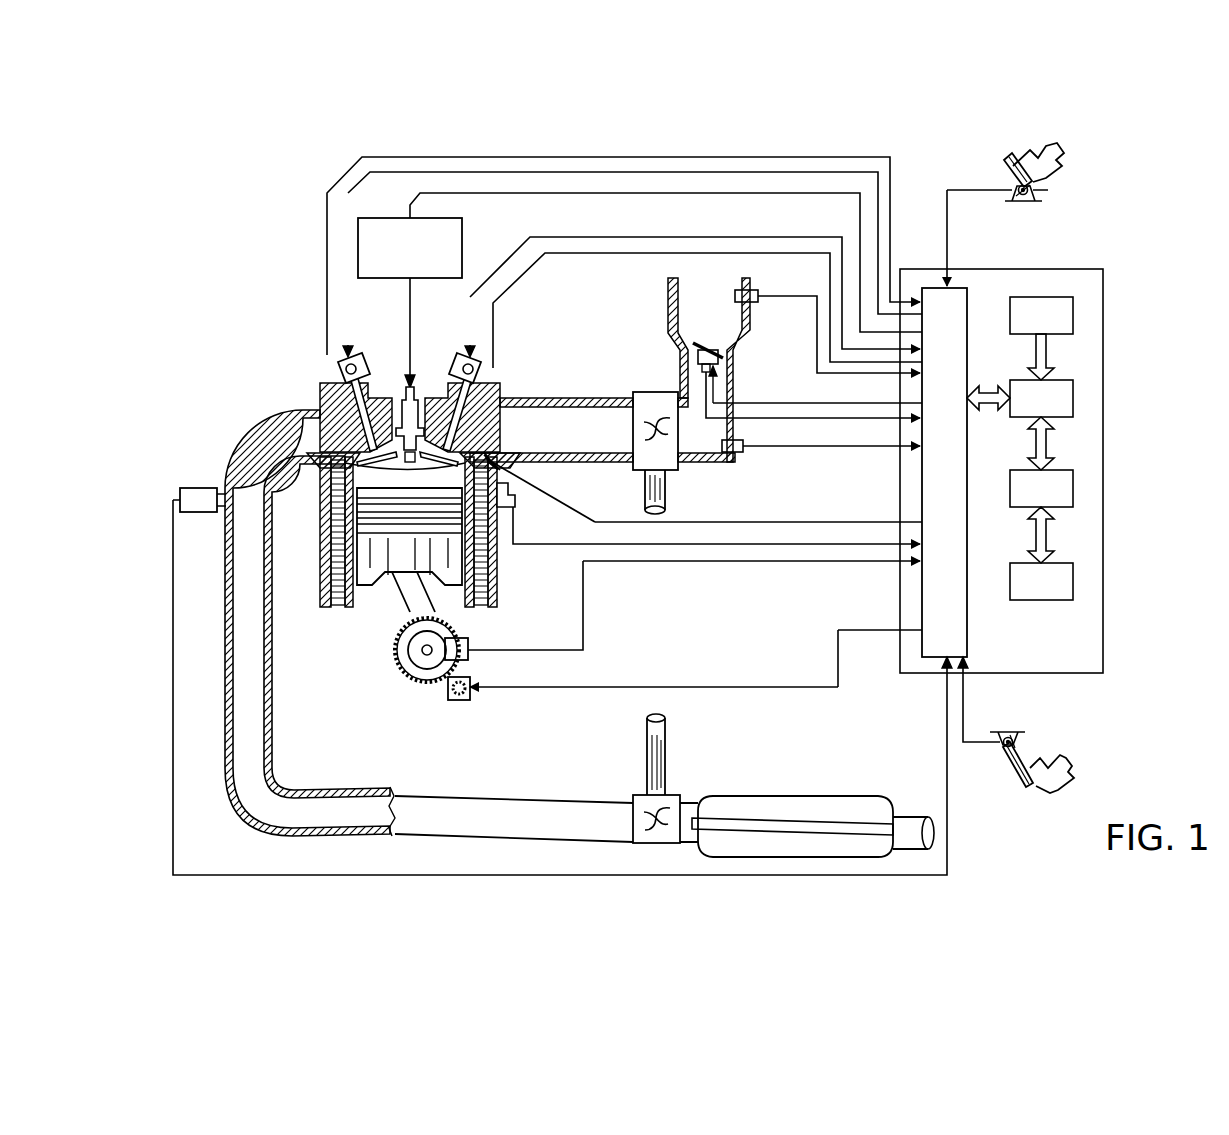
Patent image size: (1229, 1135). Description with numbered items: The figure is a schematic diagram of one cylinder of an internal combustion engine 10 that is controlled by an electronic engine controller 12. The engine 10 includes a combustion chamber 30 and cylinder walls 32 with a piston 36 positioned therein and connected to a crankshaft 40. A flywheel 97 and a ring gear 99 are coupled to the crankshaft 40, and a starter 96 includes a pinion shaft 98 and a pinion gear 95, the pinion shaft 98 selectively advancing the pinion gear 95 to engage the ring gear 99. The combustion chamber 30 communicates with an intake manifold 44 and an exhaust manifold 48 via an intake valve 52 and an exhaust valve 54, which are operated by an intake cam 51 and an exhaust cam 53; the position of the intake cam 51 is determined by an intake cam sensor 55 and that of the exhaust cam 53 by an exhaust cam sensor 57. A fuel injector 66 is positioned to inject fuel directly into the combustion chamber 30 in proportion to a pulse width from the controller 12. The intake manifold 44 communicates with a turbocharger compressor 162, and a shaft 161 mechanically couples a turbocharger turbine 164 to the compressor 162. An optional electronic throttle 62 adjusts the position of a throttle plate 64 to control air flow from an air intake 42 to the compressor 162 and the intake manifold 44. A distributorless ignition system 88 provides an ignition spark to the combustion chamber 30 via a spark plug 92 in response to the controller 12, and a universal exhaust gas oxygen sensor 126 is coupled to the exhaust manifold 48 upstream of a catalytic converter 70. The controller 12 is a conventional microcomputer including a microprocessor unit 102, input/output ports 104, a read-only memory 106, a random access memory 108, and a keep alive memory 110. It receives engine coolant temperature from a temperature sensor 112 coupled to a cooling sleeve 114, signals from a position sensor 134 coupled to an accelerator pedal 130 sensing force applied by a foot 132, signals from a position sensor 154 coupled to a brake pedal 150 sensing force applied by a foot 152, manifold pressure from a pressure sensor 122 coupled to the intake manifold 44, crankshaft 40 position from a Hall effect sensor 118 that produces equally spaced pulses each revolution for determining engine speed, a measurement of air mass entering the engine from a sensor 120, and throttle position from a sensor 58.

The internal combustion engine 10 is at (262, 347).
The electronic engine controller 12 is at (1103, 272).
The combustion chamber 30 is at (345, 545).
The cylinder walls 32 is at (350, 605).
The piston 36 is at (396, 565).
The crankshaft 40 is at (412, 676).
The air intake 42 is at (720, 316).
The intake manifold 44 is at (578, 438).
The exhaust manifold 48 is at (305, 444).
The intake cam 51 is at (466, 352).
The intake valve 52 is at (455, 442).
The exhaust cam 53 is at (352, 352).
The exhaust valve 54 is at (372, 445).
The intake cam sensor 55 is at (478, 372).
The exhaust cam sensor 57 is at (340, 375).
The throttle position sensor 58 is at (698, 362).
The electronic throttle 62 is at (726, 350).
The throttle plate 64 is at (696, 350).
The fuel injector 66 is at (508, 478).
The catalytic converter 70 is at (740, 796).
The distributorless ignition system 88 is at (366, 218).
The spark plug 92 is at (413, 388).
The pinion gear 95 is at (455, 702).
The starter 96 is at (466, 700).
The flywheel 97 is at (405, 650).
The pinion shaft 98 is at (440, 698).
The ring gear 99 is at (418, 692).
The microprocessor unit 102 is at (1073, 404).
The input/output ports 104 is at (967, 296).
The read-only memory 106 is at (1073, 320).
The random access memory 108 is at (1073, 494).
The keep alive memory 110 is at (1073, 588).
The temperature sensor 112 is at (515, 497).
The cooling sleeve 114 is at (495, 565).
The Hall effect sensor 118 is at (468, 640).
The air mass sensor 120 is at (752, 290).
The pressure sensor 122 is at (743, 452).
The Universal Exhaust Gas Oxygen sensor 126 is at (180, 488).
The accelerator pedal 130 is at (1044, 205).
The foot 132 is at (1064, 157).
The position sensor 134 is at (1040, 190).
The brake pedal 150 is at (1016, 730).
The foot 152 is at (1060, 756).
The position sensor 154 is at (1000, 737).
The shaft 161 is at (667, 760).
The turbocharger compressor 162 is at (633, 393).
The turbocharger turbine 164 is at (640, 796).